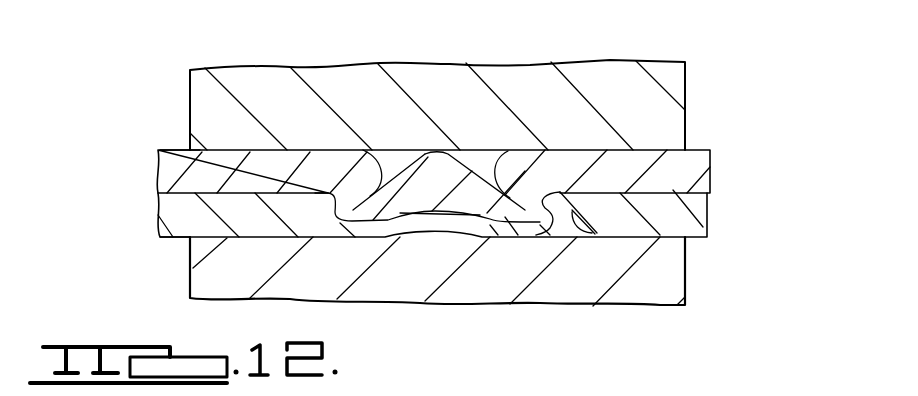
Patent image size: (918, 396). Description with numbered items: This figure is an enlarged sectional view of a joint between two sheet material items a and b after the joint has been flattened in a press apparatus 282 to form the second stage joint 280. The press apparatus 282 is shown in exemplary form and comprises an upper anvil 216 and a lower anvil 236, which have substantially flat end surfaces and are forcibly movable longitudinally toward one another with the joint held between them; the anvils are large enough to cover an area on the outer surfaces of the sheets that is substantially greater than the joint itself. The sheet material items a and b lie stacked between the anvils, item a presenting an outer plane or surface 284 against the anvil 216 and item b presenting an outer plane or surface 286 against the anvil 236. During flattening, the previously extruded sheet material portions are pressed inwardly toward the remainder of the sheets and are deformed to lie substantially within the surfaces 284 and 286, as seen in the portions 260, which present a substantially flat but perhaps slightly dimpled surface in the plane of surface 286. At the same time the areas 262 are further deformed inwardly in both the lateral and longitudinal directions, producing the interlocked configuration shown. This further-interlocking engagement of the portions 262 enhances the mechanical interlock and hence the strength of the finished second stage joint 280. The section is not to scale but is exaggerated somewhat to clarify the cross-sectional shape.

The anvil 216 is at (542, 80).
The anvil 236 is at (660, 285).
The second stage joint 280 is at (565, 150).
The press apparatus 282 is at (189, 92).
The outer plane or surface 284 is at (173, 150).
The outer plane or surface 286 is at (163, 238).
The sheet material portions 262 is at (320, 194).
The portions 260 is at (445, 212).
The sheet material item a is at (690, 163).
The sheet material item b is at (677, 212).